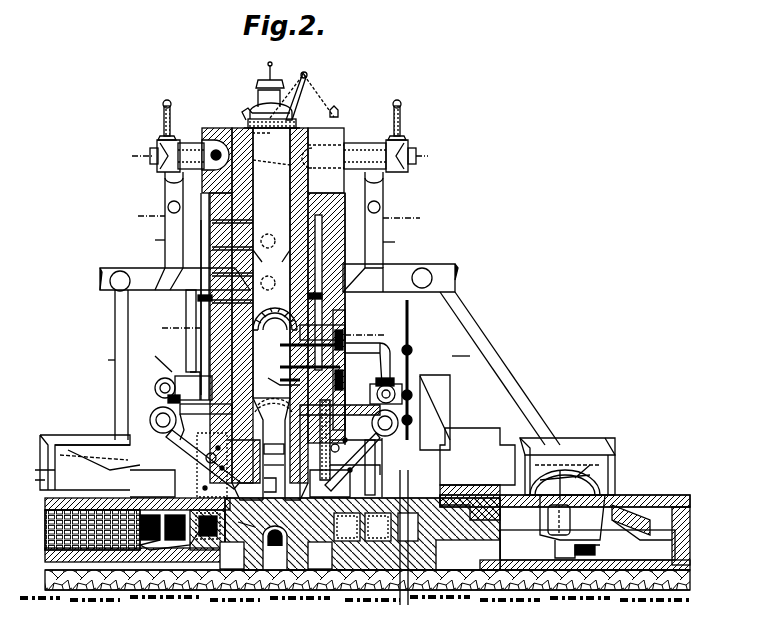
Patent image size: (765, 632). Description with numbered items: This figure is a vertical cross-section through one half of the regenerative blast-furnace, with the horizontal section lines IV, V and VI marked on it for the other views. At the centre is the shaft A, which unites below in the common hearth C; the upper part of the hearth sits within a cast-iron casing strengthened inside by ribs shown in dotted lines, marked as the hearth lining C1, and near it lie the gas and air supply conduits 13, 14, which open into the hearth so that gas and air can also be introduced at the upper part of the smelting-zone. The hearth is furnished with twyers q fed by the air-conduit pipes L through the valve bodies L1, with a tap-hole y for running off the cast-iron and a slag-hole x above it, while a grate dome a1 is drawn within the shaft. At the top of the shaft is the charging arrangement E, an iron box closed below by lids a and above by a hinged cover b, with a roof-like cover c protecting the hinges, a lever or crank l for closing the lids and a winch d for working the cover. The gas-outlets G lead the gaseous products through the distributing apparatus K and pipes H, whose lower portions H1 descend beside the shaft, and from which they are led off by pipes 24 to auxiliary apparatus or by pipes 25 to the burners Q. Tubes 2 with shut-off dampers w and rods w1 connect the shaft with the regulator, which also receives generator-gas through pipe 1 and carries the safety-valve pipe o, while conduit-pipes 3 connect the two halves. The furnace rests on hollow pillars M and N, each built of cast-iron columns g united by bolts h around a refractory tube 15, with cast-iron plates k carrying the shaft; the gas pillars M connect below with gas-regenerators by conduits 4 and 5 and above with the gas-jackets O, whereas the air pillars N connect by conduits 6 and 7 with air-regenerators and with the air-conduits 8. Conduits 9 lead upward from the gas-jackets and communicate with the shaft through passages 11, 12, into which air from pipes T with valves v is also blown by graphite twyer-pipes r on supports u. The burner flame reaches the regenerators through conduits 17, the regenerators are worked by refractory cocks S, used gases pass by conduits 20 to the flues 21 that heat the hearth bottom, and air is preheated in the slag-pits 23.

The shaft A is at (271, 263).
The conduit-pipes 3 is at (323, 160).
The tubes 2 is at (243, 261).
The passages 11 is at (260, 312).
The passages 12 is at (282, 312).
The conduits 9 is at (260, 307).
The slag-hole x is at (260, 291).
The grate dome a1 is at (275, 312).
The hearth C is at (270, 449).
The hearth lining C1 is at (273, 402).
The gas supply conduit 13 is at (274, 449).
The air supply conduit 14 is at (274, 460).
The twyers q is at (270, 479).
The charging arrangement E is at (278, 117).
The roof-like cover c is at (271, 110).
The pipe o is at (256, 84).
The hinged cover b is at (288, 96).
The winch d is at (327, 98).
The lever or crank l is at (240, 113).
The lids a is at (263, 143).
The gas-outlets G is at (271, 167).
The distributing apparatus K is at (283, 136).
The section line IV is at (274, 155).
The pipes H is at (165, 186).
The section line V is at (279, 217).
The gas pipe lower part H1 is at (275, 241).
The pipes 24 is at (279, 441).
The pipes 25 is at (326, 367).
The section line VI is at (271, 331).
The pipes T is at (287, 337).
The valve v is at (268, 371).
The valve body L1 is at (284, 388).
The air-conduit pipes L is at (265, 435).
The cast-iron plates k is at (166, 399).
The bolts h is at (182, 460).
The hollow pillars M is at (228, 465).
The cast-iron columns g is at (176, 482).
The burner Q is at (327, 435).
The tap-hole y is at (41, 484).
The conduits 17 is at (284, 488).
The gas-jackets O is at (345, 322).
The shut-off dampers w is at (406, 380).
The hollow pillars N is at (361, 450).
The twyer-pipes r is at (340, 450).
The support u is at (330, 492).
The rod w1 is at (355, 467).
The pipe 1 is at (257, 490).
The conduit 5 is at (175, 527).
The conduit 4 is at (208, 526).
The tube 15 is at (248, 523).
The conduits 20 is at (447, 550).
The flues 21 is at (275, 548).
The conduit 6 is at (347, 527).
The conduit 7 is at (391, 527).
The air-conduits 8 is at (284, 382).
The slag-pits 23 is at (651, 535).
The cocks S is at (570, 520).